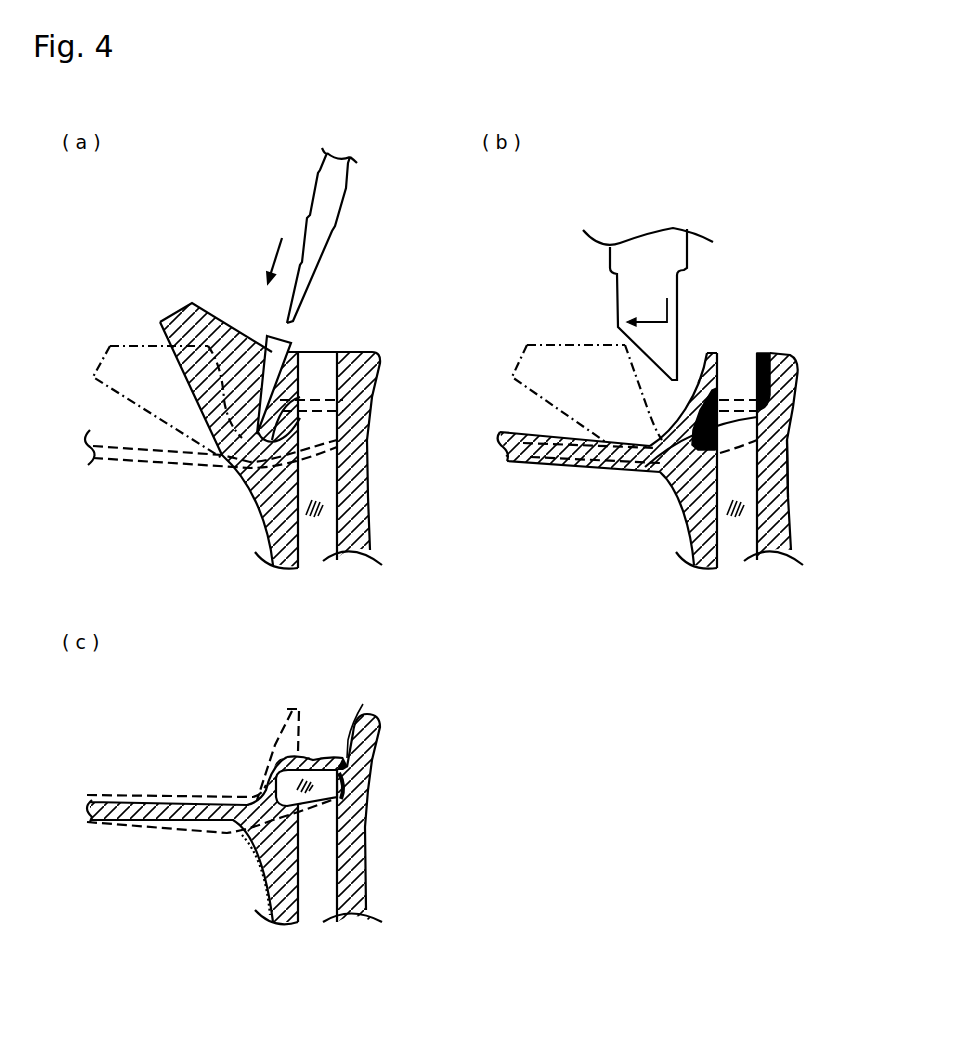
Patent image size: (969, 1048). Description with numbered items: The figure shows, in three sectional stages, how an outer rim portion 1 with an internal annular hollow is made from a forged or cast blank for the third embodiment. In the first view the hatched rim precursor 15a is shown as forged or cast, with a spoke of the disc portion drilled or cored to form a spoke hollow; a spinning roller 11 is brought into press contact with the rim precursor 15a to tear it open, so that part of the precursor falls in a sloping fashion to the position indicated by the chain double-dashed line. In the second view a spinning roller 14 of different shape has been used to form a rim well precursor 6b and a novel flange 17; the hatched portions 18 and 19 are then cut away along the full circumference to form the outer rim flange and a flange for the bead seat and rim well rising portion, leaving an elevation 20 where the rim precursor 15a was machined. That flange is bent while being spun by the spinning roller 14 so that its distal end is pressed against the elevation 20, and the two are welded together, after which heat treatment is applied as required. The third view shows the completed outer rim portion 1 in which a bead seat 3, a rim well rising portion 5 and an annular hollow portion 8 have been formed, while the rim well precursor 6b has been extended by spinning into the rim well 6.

The outer rim portion 1 is at (380, 326).
The bead seat 3 is at (317, 759).
The rim well rising portion 5 is at (267, 783).
The rim well 6 is at (182, 817).
The rim well precursor 6b is at (598, 467).
The annular hollow portion 8 is at (313, 787).
The spinning roller 11 is at (333, 203).
The spinning roller 14 is at (678, 250).
The rim precursor 15a is at (206, 311).
The flange 17 is at (720, 350).
The hatched portion 18 is at (720, 427).
The hatched portion 19 is at (768, 352).
The elevation 20 is at (340, 770).